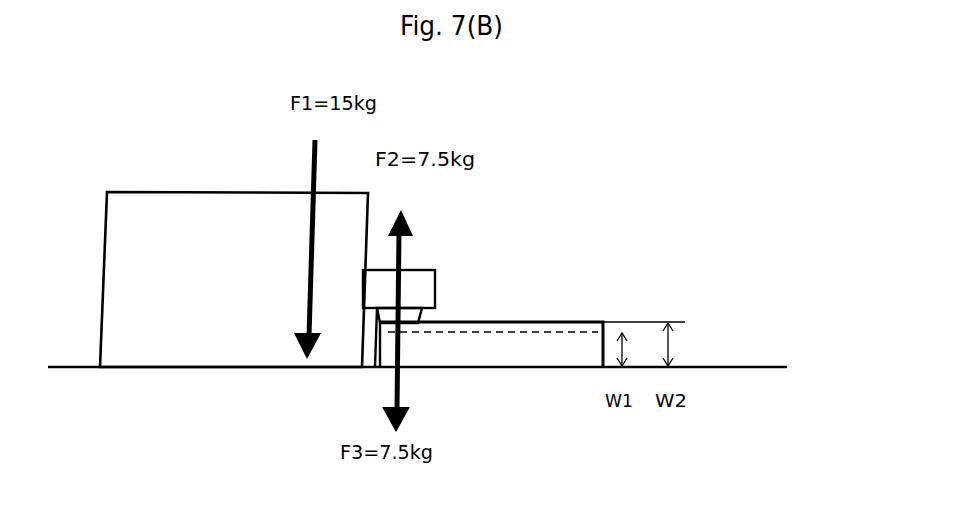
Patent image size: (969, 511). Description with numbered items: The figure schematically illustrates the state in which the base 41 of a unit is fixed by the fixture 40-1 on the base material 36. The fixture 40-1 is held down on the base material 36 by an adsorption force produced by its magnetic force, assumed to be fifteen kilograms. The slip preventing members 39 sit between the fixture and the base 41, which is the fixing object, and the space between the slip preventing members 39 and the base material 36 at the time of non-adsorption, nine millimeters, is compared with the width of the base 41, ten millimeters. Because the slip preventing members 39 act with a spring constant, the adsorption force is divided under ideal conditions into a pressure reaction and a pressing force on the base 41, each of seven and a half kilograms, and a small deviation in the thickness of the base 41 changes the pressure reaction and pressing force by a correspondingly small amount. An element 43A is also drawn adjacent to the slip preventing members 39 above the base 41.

The fixture 40-1 is at (129, 178).
The base material 36 is at (77, 366).
The pressing block 43A is at (427, 270).
The slip preventing member 39 is at (422, 317).
The base 41 is at (547, 320).